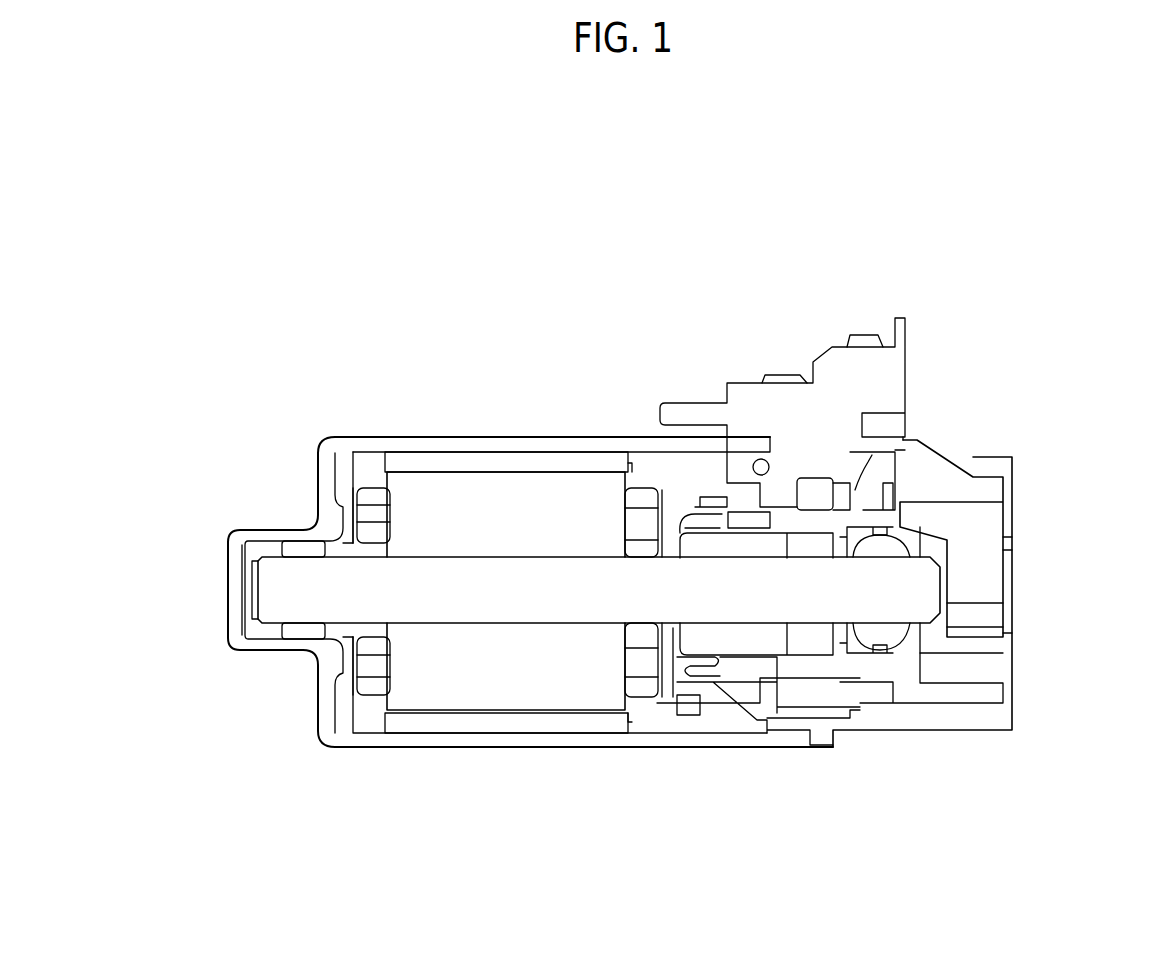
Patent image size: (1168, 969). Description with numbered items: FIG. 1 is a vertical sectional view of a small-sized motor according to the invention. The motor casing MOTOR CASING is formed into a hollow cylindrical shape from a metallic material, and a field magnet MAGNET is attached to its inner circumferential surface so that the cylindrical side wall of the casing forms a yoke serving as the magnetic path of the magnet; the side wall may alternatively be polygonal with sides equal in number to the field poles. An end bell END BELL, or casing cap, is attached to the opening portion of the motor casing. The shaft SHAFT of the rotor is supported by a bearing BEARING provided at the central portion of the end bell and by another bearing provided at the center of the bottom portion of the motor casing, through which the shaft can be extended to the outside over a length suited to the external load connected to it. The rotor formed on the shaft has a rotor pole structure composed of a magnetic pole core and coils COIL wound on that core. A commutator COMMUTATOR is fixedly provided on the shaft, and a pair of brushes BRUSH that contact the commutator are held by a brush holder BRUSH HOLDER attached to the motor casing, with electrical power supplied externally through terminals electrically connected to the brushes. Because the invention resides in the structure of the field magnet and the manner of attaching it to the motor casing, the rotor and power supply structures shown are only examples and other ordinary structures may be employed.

The motor casing MOTOR CASING is at (372, 443).
The bearing BEARING is at (298, 553).
The shaft SHAFT is at (312, 600).
The field magnet MAGNET is at (537, 723).
The coil COIL is at (368, 668).
The commutator COMMUTATOR is at (728, 647).
The brush holder BRUSH HOLDER is at (813, 413).
The brush BRUSH is at (742, 520).
The end bell END BELL is at (958, 518).